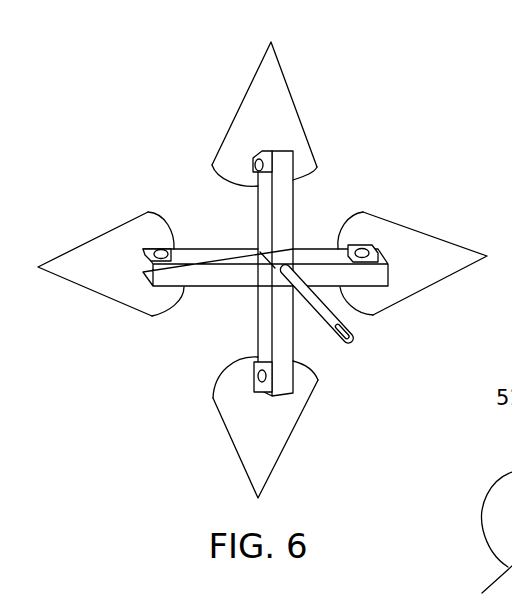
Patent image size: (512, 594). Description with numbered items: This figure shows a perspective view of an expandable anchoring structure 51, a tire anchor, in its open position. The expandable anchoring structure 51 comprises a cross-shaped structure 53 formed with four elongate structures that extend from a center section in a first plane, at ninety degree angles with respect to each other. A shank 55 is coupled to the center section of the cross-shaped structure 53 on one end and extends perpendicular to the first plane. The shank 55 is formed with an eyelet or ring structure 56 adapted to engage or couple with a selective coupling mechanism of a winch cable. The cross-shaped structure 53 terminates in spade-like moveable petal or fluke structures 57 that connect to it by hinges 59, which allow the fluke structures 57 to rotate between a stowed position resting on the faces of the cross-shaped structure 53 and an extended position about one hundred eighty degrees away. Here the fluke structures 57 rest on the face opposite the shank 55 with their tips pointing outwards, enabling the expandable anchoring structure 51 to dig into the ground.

The expandable anchoring structure 51 is at (268, 270).
The cross-shaped structure 53 is at (275, 321).
The shank 55 is at (308, 283).
The eyelet or ring structure 56 is at (371, 352).
The moveable petal or fluke structures 57 is at (272, 82).
The hinges 59 is at (265, 155).